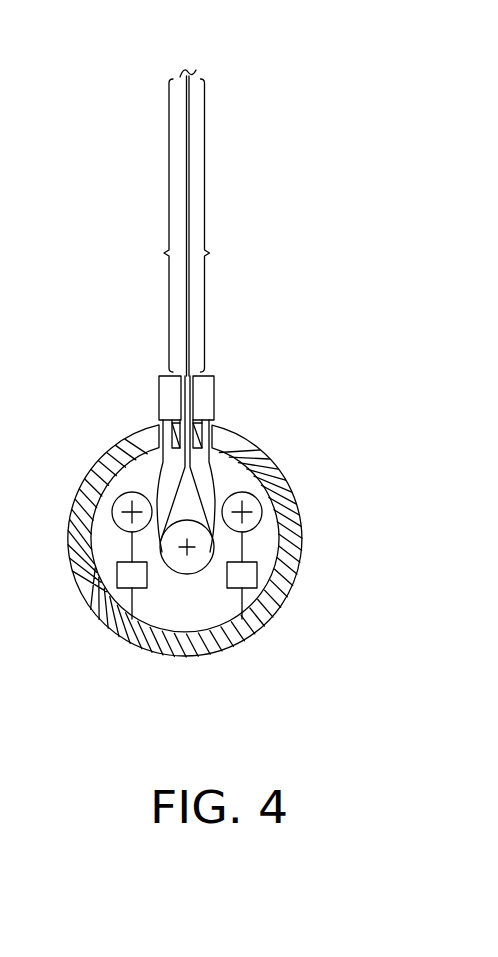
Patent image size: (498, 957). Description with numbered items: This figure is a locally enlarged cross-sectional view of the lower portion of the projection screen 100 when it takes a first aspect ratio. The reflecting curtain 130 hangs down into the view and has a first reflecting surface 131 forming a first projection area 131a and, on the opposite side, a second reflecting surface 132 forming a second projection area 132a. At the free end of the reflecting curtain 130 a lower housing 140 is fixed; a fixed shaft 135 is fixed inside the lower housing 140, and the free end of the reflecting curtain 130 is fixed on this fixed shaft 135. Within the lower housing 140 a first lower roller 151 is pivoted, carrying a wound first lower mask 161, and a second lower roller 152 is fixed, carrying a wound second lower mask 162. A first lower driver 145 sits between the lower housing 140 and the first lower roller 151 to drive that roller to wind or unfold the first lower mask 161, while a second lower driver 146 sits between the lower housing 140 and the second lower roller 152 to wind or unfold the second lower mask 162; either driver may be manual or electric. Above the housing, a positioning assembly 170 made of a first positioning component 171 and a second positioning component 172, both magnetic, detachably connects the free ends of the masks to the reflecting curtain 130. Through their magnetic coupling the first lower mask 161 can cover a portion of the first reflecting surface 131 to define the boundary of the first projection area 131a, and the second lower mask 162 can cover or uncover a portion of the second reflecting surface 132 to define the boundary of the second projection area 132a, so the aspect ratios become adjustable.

The projection screen 100 is at (283, 670).
The reflecting curtain 130 is at (189, 225).
The first reflecting surface 131 is at (202, 156).
The second reflecting surface 132 is at (172, 182).
The first projection area 131a is at (234, 225).
The second projection area 132a is at (141, 225).
The fixed shaft 135 is at (182, 567).
The lower housing 140 is at (290, 535).
The first lower driver 145 is at (257, 576).
The second lower driver 146 is at (118, 577).
The first lower roller 151 is at (262, 512).
The second lower roller 152 is at (114, 506).
The first lower mask 161 is at (220, 482).
The second lower mask 162 is at (163, 483).
The positioning assembly 170 is at (192, 367).
The first positioning component 171 is at (213, 398).
The second positioning component 172 is at (160, 395).